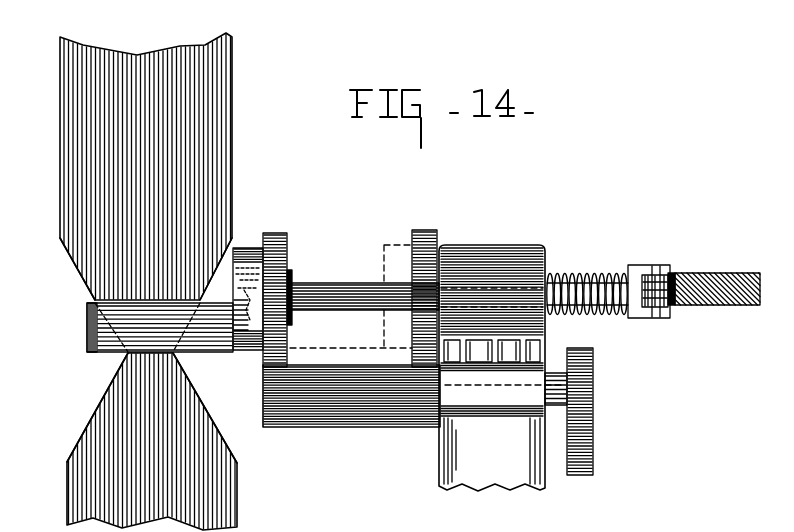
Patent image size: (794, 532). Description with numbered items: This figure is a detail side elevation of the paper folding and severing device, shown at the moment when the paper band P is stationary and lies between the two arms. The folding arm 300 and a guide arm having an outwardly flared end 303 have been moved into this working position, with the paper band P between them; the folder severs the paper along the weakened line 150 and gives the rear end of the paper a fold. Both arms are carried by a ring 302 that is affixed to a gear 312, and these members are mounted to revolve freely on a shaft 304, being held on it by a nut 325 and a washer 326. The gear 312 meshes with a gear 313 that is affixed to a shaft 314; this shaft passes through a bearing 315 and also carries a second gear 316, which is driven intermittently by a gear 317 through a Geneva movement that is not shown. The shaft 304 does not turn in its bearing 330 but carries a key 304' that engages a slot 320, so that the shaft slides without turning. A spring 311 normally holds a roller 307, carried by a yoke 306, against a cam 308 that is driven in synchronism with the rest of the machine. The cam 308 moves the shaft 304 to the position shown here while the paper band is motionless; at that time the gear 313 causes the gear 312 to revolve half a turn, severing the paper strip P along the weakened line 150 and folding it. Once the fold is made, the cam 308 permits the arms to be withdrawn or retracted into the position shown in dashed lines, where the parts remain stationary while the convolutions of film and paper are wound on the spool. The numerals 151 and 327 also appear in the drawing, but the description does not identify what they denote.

The paper band P is at (105, 170).
The tapered edge 151 is at (93, 281).
The weakened line 150 is at (150, 356).
The folding arm 300 is at (130, 328).
The outwardly flared end 303 is at (95, 312).
The ring 302 is at (250, 251).
The gear 312 is at (272, 240).
The nut 325 is at (292, 268).
The shaft 304 is at (459, 300).
The washer 326 is at (290, 332).
The slot 320 is at (495, 250).
The bearing 330 is at (472, 290).
The bearing 315 is at (445, 425).
The lower housing portion 327 is at (487, 475).
The spring 311 is at (615, 272).
The yoke 306 is at (665, 250).
The key 304' is at (666, 317).
The roller 307 is at (675, 303).
The cam 308 is at (760, 258).
The gear 313 is at (308, 428).
The shaft 314 is at (594, 382).
The second gear 316 is at (594, 405).
The gear 317 is at (594, 458).